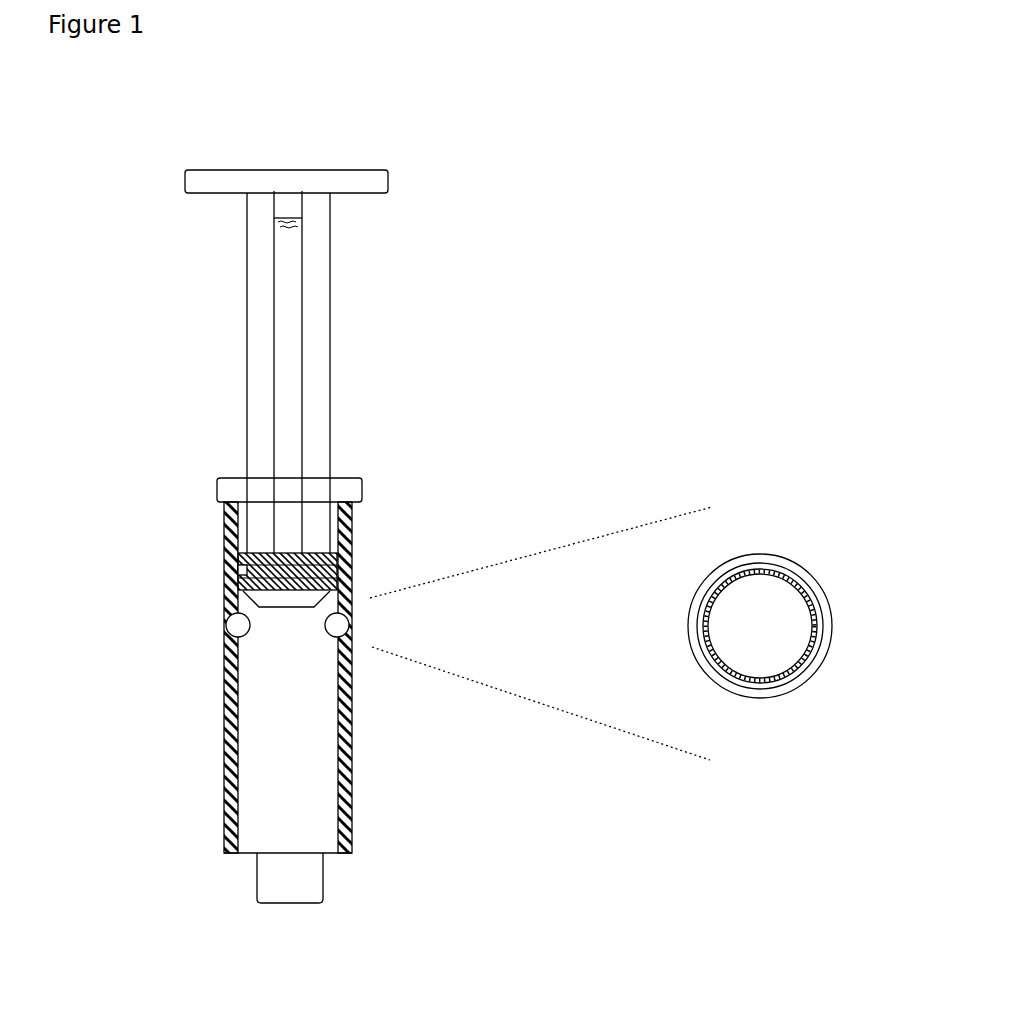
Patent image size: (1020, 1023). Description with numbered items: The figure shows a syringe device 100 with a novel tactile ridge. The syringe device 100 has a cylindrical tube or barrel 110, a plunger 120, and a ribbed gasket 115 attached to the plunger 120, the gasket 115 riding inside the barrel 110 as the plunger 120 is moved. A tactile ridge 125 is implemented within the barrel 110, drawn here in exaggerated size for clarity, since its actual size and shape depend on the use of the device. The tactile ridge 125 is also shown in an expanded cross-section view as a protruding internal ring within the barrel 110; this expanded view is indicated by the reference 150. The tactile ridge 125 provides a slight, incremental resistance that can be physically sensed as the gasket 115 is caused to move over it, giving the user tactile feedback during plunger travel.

The syringe device 100 is at (482, 536).
The barrel 110 is at (212, 765).
The ribbed gasket 115 is at (362, 553).
The plunger 120 is at (342, 388).
The tactile ridge 125 is at (222, 629).
The inner liner 150 is at (743, 562).